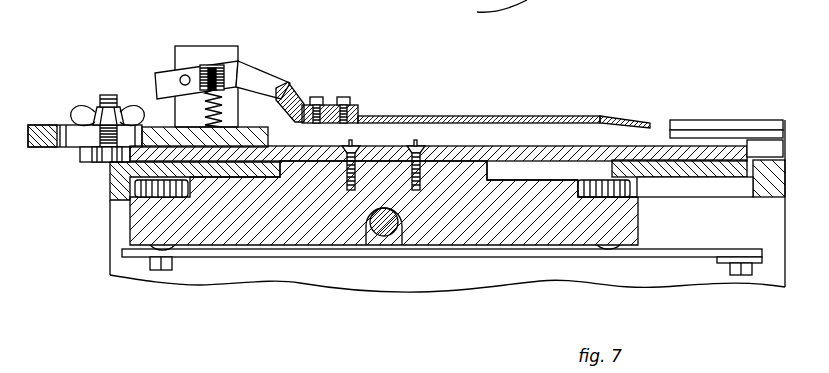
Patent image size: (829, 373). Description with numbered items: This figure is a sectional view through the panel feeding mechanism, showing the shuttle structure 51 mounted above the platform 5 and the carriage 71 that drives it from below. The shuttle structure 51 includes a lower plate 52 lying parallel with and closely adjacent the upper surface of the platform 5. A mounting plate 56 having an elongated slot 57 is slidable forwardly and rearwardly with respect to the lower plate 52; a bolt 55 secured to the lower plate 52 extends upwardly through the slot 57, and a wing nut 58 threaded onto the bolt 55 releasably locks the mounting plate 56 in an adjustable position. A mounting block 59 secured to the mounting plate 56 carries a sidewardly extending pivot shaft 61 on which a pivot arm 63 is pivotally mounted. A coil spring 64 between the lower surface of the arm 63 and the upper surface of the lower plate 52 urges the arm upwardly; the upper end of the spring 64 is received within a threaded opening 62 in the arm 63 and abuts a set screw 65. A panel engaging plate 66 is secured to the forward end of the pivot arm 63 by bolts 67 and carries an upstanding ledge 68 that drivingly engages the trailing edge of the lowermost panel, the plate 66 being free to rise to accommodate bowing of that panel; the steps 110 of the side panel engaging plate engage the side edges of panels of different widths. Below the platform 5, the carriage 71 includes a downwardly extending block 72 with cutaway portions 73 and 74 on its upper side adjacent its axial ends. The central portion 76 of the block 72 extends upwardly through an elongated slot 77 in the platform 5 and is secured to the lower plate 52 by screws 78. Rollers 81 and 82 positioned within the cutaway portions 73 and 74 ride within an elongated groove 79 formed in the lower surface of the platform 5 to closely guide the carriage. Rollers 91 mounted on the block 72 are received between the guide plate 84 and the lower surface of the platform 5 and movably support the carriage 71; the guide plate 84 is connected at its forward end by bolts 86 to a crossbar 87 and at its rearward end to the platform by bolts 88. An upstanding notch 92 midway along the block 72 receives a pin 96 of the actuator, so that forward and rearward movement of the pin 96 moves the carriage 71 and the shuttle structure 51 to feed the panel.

The platform 5 is at (708, 164).
The shuttle structure 51 is at (664, 117).
The lower plate 52 is at (663, 150).
The bolt 55 is at (98, 160).
The mounting plate 56 is at (40, 135).
The elongated slot 57 is at (73, 138).
The wing nut 58 is at (88, 108).
The mounting block 59 is at (180, 47).
The pivot shaft 61 is at (183, 80).
The threaded opening 62 is at (209, 78).
The pivot arm 63 is at (271, 88).
The coil spring 64 is at (233, 88).
The set screw 65 is at (211, 67).
The panel engaging plate 66 is at (437, 117).
The bolts 67 is at (345, 97).
The upstanding ledge 68 is at (585, 120).
The carriage 71 is at (433, 250).
The block 72 is at (350, 228).
The cutaway portion 73 is at (623, 200).
The cutaway portion 74 is at (132, 205).
The central portion 76 is at (385, 168).
The elongated slot 77 is at (500, 168).
The screws 78 is at (355, 149).
The elongated groove 79 is at (727, 190).
The roller 81 is at (604, 178).
The roller 82 is at (143, 190).
The guide plate 84 is at (407, 258).
The bolts 86 is at (751, 272).
The crossbar 87 is at (725, 263).
The bolts 88 is at (168, 272).
The rollers 91 is at (165, 248).
The upstanding notch 92 is at (402, 214).
The pin 96 is at (370, 215).
The ledges or steps 110 is at (737, 135).